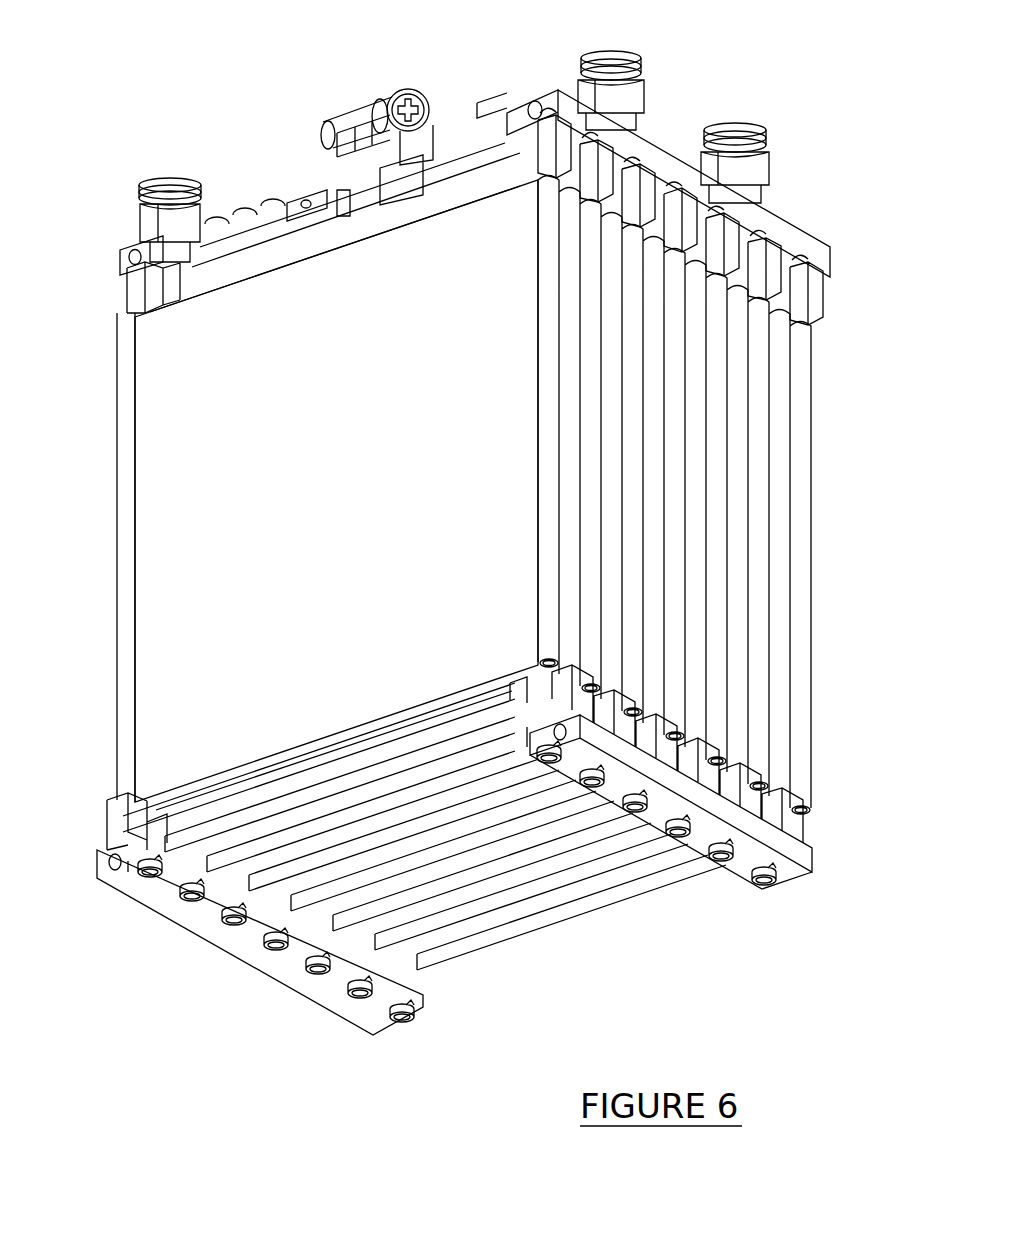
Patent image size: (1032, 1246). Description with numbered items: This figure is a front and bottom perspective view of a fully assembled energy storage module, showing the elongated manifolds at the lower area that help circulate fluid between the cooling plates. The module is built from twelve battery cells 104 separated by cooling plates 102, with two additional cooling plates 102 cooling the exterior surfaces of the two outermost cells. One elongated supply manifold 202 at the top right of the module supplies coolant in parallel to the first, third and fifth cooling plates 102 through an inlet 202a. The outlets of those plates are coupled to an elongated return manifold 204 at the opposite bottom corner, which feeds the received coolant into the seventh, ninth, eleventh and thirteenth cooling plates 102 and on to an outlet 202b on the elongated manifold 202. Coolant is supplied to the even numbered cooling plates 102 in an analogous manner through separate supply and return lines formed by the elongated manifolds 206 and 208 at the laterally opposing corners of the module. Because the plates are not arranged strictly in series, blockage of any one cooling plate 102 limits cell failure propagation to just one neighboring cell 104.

The cooling plate 102 is at (175, 635).
The battery cell 104 is at (245, 808).
The elongated supply manifold 202 is at (825, 250).
The inlet 202a is at (637, 98).
The outlet 202b is at (763, 173).
The elongated return manifold 204 is at (200, 920).
The elongated manifold 206 is at (118, 262).
The elongated manifold 208 is at (790, 870).